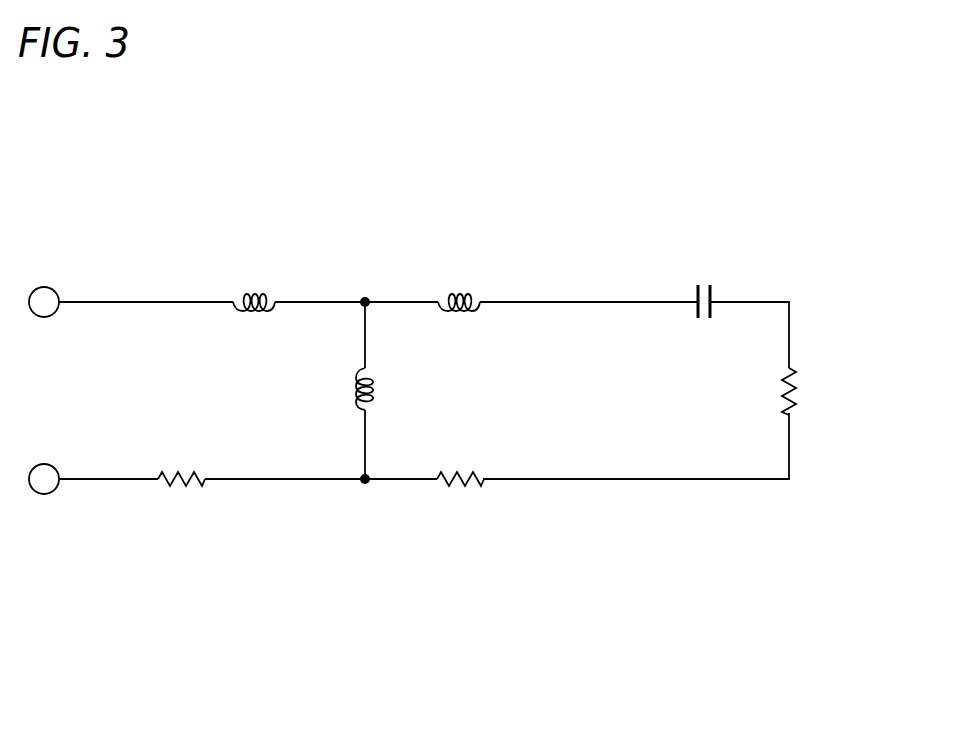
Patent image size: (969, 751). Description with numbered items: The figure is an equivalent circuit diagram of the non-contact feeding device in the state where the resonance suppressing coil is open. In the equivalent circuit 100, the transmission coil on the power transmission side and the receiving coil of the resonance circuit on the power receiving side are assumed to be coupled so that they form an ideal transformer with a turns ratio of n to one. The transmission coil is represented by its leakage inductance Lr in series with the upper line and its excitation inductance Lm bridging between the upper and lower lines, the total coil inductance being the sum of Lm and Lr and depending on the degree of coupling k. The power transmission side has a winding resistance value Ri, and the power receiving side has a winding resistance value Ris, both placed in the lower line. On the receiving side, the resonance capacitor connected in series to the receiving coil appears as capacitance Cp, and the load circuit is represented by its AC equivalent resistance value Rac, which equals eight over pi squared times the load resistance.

The equivalent circuit 100 is at (454, 427).
The leakage inductance Lr is at (356, 281).
The excitation inductance Lm is at (346, 389).
The winding resistance value Ri is at (181, 502).
The winding resistance value Ris is at (457, 502).
The AC equivalent resistance value Rac is at (831, 391).
The capacitance Cp is at (707, 282).